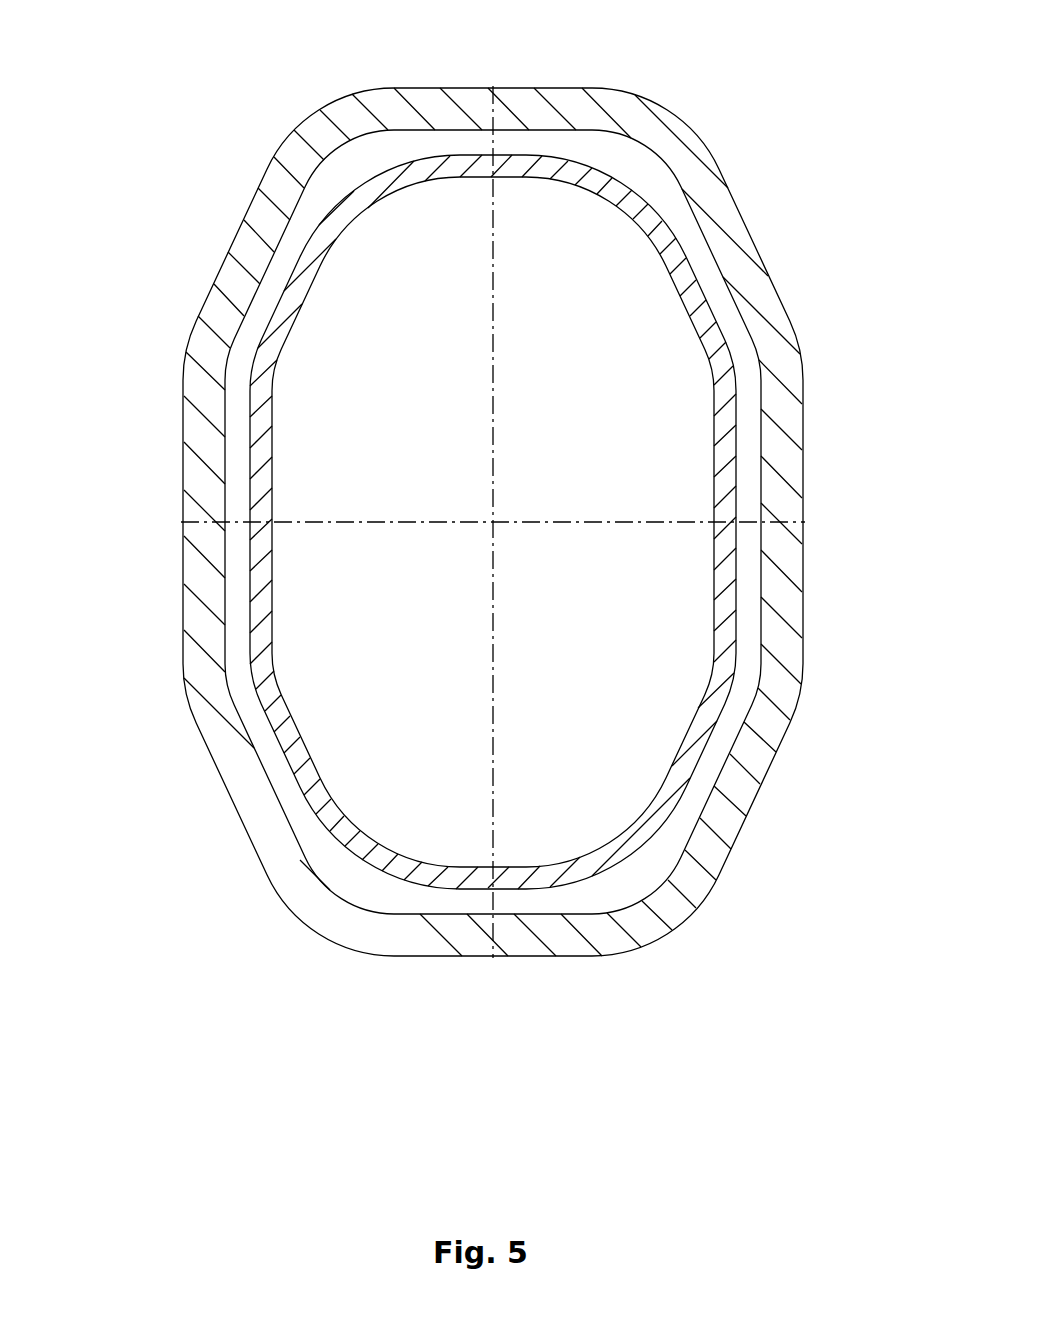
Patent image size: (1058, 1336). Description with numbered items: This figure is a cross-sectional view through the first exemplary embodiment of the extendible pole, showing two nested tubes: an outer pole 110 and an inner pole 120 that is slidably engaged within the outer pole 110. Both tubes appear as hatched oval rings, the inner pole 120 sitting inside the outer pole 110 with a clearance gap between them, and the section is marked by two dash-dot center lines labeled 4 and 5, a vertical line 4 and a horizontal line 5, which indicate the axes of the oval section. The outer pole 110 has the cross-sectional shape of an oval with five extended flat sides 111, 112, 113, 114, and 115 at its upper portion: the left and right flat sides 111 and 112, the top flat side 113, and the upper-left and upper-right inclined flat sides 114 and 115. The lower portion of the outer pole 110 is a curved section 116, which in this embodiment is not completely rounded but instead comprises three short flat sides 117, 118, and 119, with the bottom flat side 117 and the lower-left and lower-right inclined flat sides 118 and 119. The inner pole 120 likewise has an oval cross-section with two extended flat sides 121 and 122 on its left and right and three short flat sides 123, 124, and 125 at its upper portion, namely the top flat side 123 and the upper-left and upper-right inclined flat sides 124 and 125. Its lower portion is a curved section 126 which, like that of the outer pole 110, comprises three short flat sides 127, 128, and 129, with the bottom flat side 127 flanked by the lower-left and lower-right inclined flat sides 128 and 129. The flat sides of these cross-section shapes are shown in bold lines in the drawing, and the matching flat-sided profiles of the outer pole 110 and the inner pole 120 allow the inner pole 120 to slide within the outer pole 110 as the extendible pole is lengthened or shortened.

The section line 4- 4 is at (532, 522).
The section line 5- 5 is at (493, 570).
The outer pole 110 is at (803, 692).
The extended flat side 111 is at (135, 533).
The extended flat side 112 is at (859, 523).
The extended flat side 113 is at (491, 69).
The extended flat side 114 is at (236, 273).
The extended flat side 115 is at (752, 249).
The curved section 116 is at (339, 942).
The short flat side 117 is at (530, 974).
The short flat side 118 is at (171, 723).
The short flat side 119 is at (774, 787).
The inner pole 120 is at (663, 830).
The extended flat side 121 is at (158, 529).
The extended flat side 122 is at (836, 528).
The short flat side 123 is at (497, 104).
The short flat side 124 is at (223, 319).
The short flat side 125 is at (752, 318).
The curved section 126 is at (338, 897).
The short flat side 127 is at (506, 940).
The short flat side 128 is at (214, 738).
The short flat side 129 is at (728, 743).